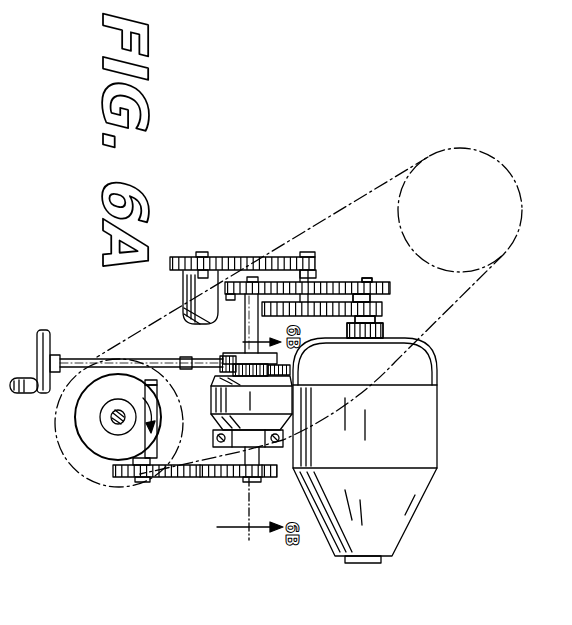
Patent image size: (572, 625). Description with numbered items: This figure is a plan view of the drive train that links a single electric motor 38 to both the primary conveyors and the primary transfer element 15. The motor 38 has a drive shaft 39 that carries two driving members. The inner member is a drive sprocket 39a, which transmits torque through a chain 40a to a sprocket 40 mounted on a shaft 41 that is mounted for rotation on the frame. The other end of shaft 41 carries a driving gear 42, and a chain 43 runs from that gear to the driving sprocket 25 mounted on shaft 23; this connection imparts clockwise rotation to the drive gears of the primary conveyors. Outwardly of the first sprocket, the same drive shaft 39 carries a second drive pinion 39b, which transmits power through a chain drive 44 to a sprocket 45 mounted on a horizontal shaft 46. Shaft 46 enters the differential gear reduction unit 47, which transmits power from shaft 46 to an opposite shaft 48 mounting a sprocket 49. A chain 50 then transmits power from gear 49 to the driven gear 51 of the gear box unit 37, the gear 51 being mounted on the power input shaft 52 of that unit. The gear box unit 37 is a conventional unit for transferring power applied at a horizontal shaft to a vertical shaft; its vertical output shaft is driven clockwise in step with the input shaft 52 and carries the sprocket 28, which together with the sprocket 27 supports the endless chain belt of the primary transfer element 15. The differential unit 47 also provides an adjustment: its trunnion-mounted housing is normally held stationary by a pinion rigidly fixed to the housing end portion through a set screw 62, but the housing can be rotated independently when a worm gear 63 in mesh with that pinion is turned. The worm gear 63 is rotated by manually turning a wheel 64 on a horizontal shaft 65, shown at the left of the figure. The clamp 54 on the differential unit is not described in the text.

The primary transfer element 15 is at (476, 295).
The shaft 23 is at (206, 253).
The driving sprocket 25 is at (183, 257).
The sprocket 27 is at (523, 205).
The sprocket 28 is at (103, 480).
The gear box unit 37 is at (90, 442).
The electric motor 38 is at (428, 447).
The drive shaft 39 is at (371, 281).
The drive sprocket 39a is at (385, 307).
The second drive pinion 39b is at (386, 290).
The sprocket 40 is at (338, 331).
The chain 40a is at (350, 331).
The shaft 41 is at (305, 257).
The driving gear 42 is at (313, 269).
The chain 43 is at (250, 257).
The chain drive 44 is at (355, 280).
The sprocket 45 is at (240, 296).
The horizontal shaft 46 is at (222, 363).
The differential gear reduction unit 47 is at (251, 391).
The shaft 48 is at (243, 481).
The sprocket 49 is at (259, 479).
The chain 50 is at (211, 478).
The driven gear 51 is at (121, 481).
The power input shaft 52 is at (142, 481).
The clamp 54 is at (212, 437).
The set screw 62 is at (184, 359).
The worm gear 63 is at (160, 392).
The turning wheel 64 is at (43, 333).
The horizontal shaft 65 is at (80, 359).